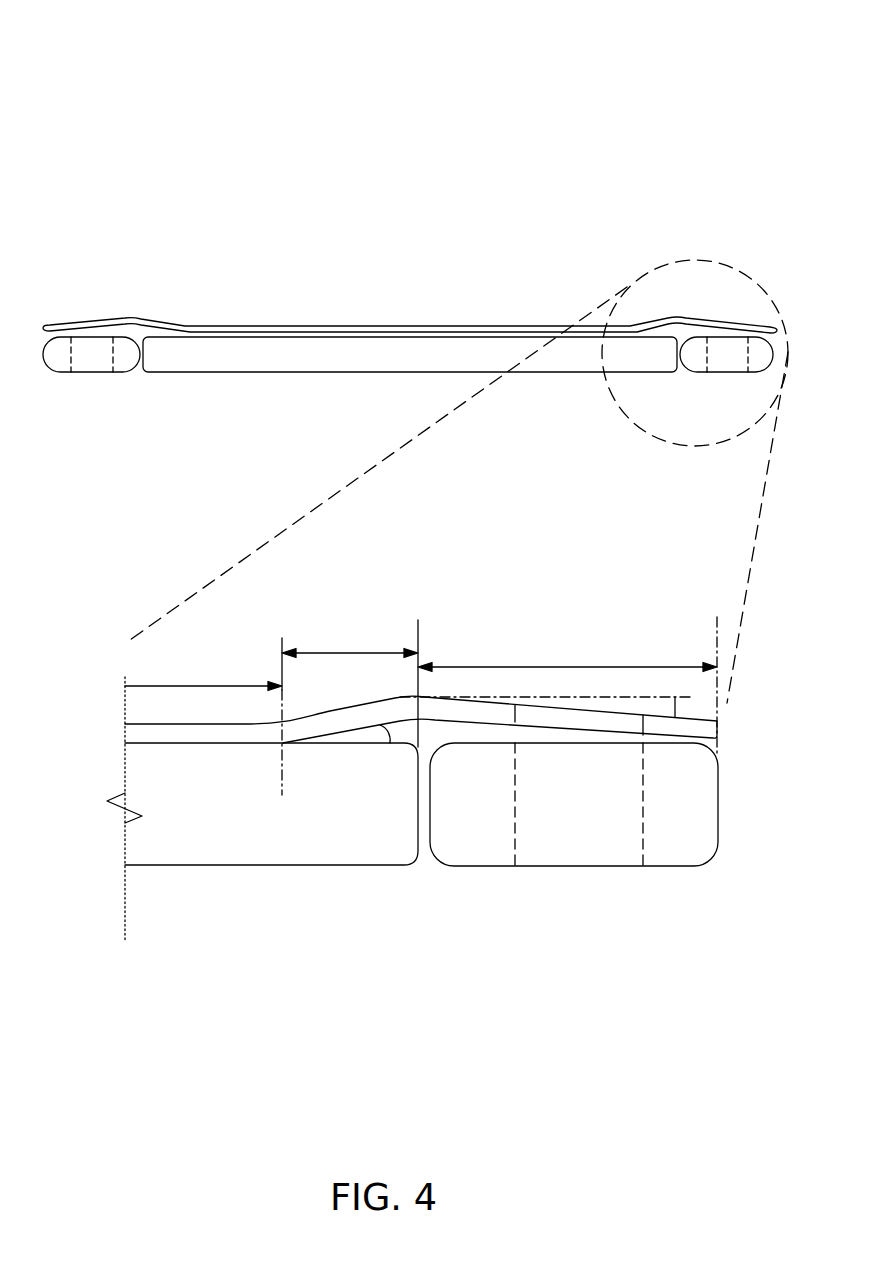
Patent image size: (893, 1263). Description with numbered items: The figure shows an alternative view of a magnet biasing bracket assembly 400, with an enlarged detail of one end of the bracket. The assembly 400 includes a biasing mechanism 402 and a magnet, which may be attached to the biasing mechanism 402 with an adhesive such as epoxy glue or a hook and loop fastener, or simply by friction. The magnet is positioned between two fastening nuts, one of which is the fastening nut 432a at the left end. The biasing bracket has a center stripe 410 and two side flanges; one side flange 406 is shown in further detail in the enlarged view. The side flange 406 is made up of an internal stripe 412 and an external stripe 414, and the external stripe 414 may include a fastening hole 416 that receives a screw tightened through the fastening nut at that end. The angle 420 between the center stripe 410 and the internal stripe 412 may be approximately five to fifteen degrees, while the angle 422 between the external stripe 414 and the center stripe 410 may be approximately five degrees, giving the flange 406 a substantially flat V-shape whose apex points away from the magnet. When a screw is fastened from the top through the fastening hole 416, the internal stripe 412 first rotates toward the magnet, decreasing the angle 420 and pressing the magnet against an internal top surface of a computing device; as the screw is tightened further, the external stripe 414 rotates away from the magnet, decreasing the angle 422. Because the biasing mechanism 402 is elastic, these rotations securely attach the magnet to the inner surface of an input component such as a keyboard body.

The magnet biasing bracket assembly 400 is at (127, 57).
The biasing mechanism 402 is at (290, 325).
The side flange 406 is at (698, 278).
The center stripe 410 is at (232, 645).
The internal stripe 412 is at (374, 612).
The external stripe 414 is at (587, 625).
The fastening hole 416 is at (577, 700).
The angle between center stripe and internal stripe 420 is at (411, 732).
The angle between external stripe and center stripe 422 is at (694, 705).
The fastening nut 432a is at (100, 372).